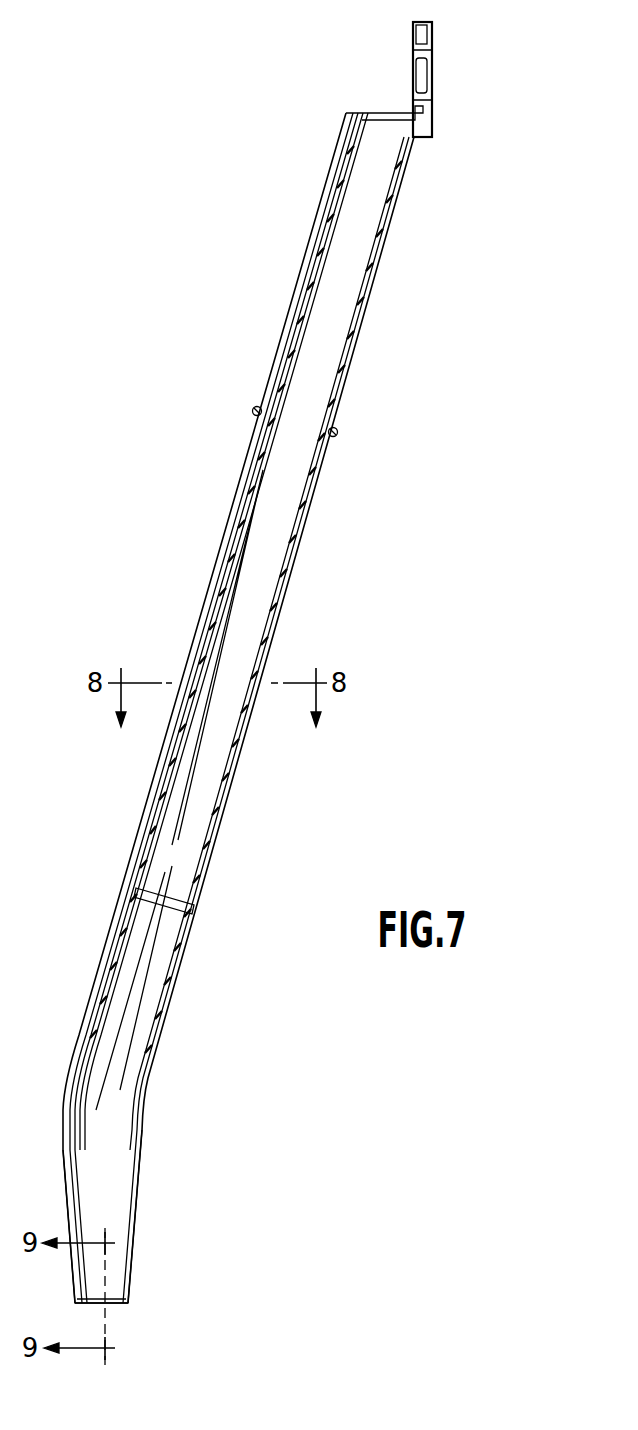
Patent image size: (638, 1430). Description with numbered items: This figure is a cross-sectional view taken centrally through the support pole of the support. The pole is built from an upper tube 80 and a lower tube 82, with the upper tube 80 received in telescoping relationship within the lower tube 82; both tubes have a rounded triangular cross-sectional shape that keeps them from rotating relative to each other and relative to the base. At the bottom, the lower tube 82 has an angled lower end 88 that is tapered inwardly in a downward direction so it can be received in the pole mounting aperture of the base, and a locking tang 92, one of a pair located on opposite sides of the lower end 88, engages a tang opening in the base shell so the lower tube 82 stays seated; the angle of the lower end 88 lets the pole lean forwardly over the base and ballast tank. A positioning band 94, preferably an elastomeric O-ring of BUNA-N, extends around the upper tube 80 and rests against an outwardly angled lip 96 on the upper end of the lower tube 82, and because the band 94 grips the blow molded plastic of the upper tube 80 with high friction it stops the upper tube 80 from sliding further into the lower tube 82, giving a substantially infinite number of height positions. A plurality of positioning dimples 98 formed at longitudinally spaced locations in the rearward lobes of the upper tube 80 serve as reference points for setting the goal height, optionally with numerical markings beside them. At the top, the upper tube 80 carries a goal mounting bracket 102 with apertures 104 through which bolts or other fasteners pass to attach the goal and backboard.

The upper tube 80 is at (362, 333).
The lower tube 82 is at (298, 560).
The angled lower end 88 is at (140, 1192).
The locking tang 92 is at (108, 1290).
The positioning band 94 is at (253, 408).
The outwardly angled lip 96 is at (337, 436).
The positioning dimples 98 is at (280, 355).
The goal mounting bracket 102 is at (427, 23).
The apertures 104 is at (413, 97).